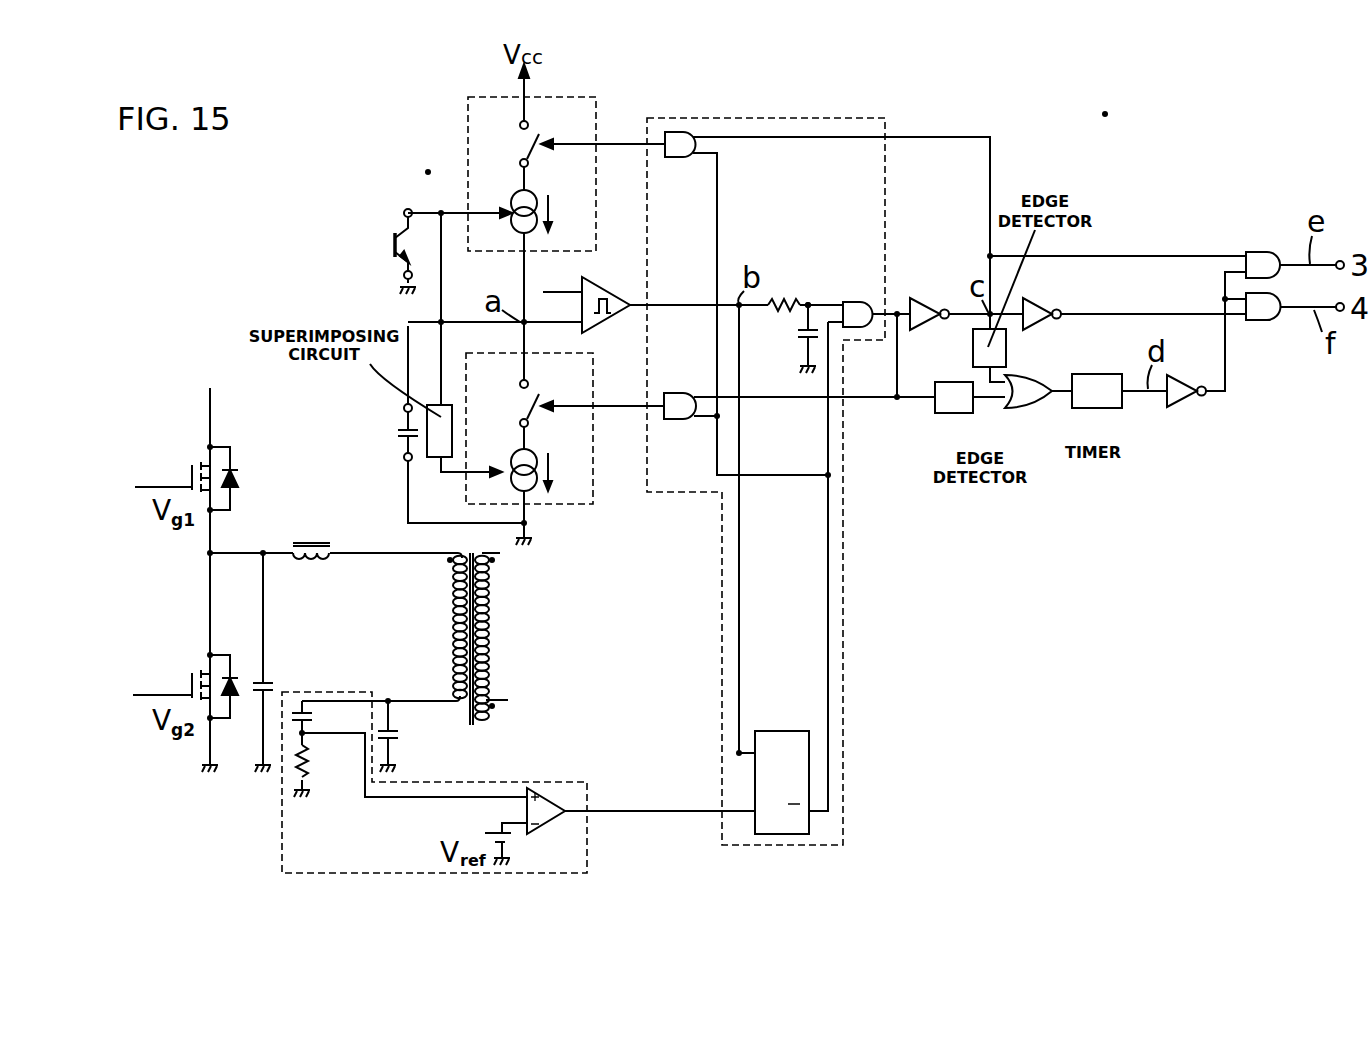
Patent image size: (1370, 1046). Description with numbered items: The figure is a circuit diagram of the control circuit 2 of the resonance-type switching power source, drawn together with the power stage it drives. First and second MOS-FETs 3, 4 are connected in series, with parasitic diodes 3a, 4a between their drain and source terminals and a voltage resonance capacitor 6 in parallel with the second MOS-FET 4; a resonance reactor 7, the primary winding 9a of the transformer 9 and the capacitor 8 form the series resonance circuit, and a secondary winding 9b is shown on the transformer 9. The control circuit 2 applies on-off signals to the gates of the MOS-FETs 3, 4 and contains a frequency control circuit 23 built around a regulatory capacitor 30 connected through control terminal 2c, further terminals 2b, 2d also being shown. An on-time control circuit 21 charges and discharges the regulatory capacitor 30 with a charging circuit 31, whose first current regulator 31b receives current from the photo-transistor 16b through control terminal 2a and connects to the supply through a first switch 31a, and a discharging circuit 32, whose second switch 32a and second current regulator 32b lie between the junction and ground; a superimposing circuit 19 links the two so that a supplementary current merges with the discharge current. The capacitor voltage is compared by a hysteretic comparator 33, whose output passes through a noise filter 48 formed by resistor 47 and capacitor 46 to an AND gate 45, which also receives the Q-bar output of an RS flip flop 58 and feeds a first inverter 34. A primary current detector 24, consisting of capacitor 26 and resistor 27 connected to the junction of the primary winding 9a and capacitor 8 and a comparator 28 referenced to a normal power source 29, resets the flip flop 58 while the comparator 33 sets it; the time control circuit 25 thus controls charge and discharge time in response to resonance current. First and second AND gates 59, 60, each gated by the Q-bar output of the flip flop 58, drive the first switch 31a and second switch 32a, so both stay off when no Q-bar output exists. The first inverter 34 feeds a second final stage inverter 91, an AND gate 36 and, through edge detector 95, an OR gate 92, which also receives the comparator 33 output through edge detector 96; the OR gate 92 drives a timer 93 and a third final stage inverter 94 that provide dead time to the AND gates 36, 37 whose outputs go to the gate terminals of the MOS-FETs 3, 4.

The control circuit 2 is at (1110, 113).
The control terminal 2a is at (404, 211).
The ground terminal 2b is at (404, 275).
The control terminal 2c is at (404, 408).
The terminal 2d is at (404, 458).
The first MOS-FET 3 is at (192, 470).
The parasitic diode 3a is at (238, 480).
The second MOS-FET 4 is at (189, 678).
The parasitic diode 4a is at (237, 666).
The voltage resonance capacitor 6 is at (275, 682).
The resonance reactor 7 is at (312, 542).
The capacitor 8 is at (398, 734).
The transformer 9 is at (448, 610).
The primary winding 9a is at (457, 648).
The secondary winding 9b is at (488, 648).
The photo-transistor 16b is at (393, 245).
The superimposing circuit 19 is at (437, 458).
The on-time control circuit 21 is at (426, 172).
The frequency control circuit 23 is at (908, 490).
The primary current detector 24 is at (496, 782).
The time control circuit 25 is at (722, 672).
The capacitor 26 is at (312, 713).
The resistor 27 is at (308, 766).
The comparator 28 is at (562, 818).
The normal power source 29 is at (488, 833).
The regulatory capacitor 30 is at (397, 438).
The charging circuit 31 is at (468, 97).
The first switch 31a is at (539, 138).
The first current regulator 31b is at (538, 194).
The discharging circuit 32 is at (593, 371).
The second switch 32a is at (537, 402).
The second current regulator 32b is at (538, 456).
The comparator 33 is at (602, 286).
The first inverter 34 is at (928, 304).
The AND gate 36 is at (1262, 254).
The AND gate 37 is at (1264, 320).
The AND gate 45 is at (862, 302).
The capacitor 46 is at (803, 335).
The resistor 47 is at (787, 310).
The noise filter 48 is at (806, 294).
The RS flip flop 58 is at (780, 731).
The first AND gate 59 is at (689, 158).
The second AND gate 60 is at (689, 420).
The second final stage inverter 91 is at (1035, 306).
The OR gate 92 is at (1028, 378).
The timer 93 is at (1098, 376).
The third final stage inverter 94 is at (1181, 376).
The edge detector 95 is at (973, 354).
The edge detector 96 is at (939, 414).